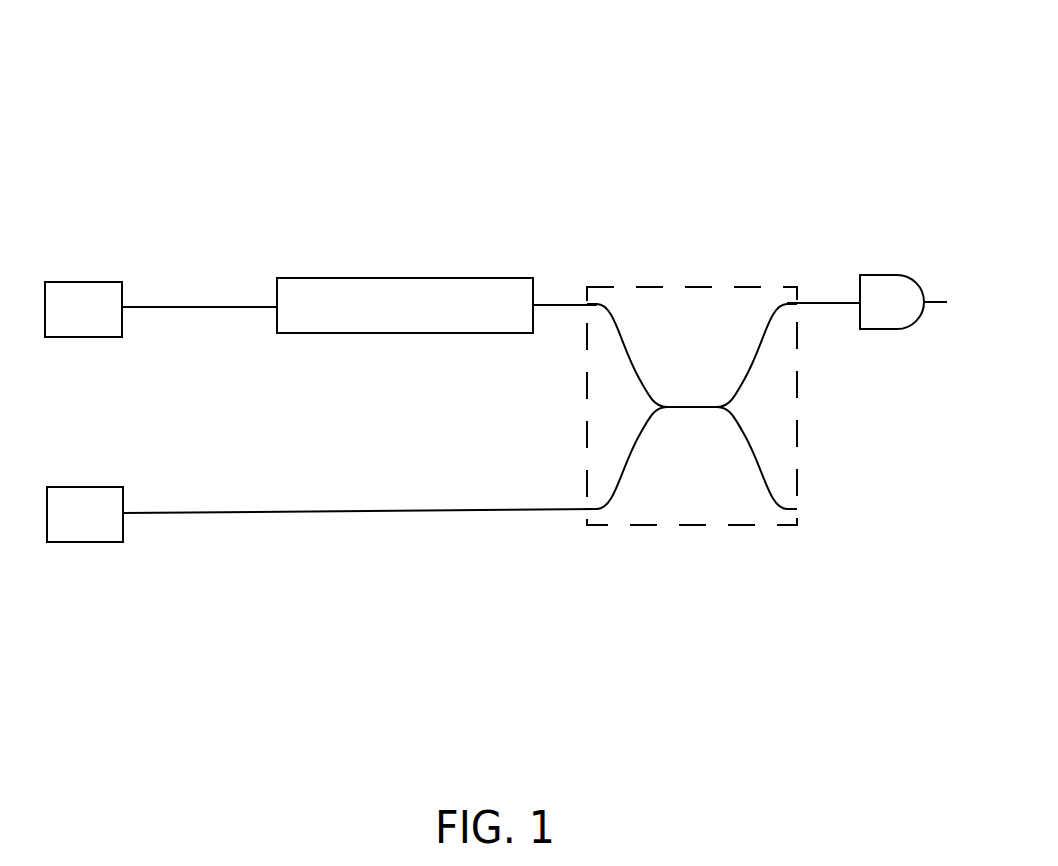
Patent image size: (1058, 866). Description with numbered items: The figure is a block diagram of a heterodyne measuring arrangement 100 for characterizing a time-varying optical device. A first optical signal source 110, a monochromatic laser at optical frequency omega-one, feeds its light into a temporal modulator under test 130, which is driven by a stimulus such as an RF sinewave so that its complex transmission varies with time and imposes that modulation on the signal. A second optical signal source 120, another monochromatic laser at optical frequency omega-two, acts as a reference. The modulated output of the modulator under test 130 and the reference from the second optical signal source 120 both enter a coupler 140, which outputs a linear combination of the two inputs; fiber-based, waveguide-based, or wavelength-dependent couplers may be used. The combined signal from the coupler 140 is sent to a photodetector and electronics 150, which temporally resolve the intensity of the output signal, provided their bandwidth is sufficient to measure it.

The heterodyne arrangement 100 is at (115, 45).
The first optical signal source 110 is at (75, 282).
The second optical signal source 120 is at (85, 542).
The temporal modulator under test 130 is at (413, 278).
The coupler 140 is at (710, 287).
The photodetector and electronics 150 is at (882, 275).